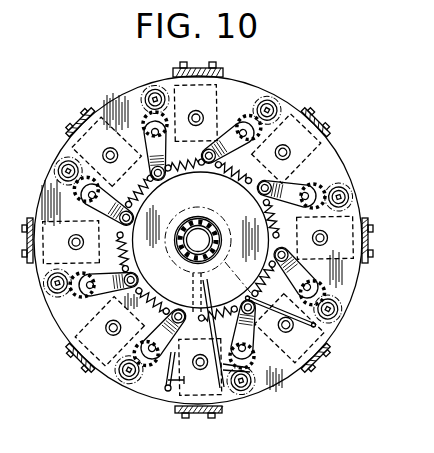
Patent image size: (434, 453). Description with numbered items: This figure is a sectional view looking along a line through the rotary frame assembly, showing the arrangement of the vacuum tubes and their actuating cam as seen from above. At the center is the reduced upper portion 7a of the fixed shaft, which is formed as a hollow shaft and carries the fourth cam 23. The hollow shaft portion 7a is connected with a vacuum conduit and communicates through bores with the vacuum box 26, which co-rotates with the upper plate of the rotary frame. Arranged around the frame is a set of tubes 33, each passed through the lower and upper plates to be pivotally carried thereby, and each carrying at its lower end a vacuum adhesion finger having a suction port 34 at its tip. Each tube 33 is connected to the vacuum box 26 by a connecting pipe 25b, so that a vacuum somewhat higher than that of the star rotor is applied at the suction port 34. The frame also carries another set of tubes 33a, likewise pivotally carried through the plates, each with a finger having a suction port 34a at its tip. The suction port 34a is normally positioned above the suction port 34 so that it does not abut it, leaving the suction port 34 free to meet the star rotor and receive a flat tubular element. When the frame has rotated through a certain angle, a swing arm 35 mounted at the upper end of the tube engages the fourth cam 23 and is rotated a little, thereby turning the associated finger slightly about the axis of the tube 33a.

The reduced upper portion of the fixed shaft 7a is at (180, 249).
The fourth cam 23 is at (138, 226).
The connecting pipe 25b is at (333, 332).
The vacuum box 26 is at (194, 207).
The tube 33 is at (310, 187).
The tube 33a is at (349, 196).
The suction port 34 is at (315, 252).
The suction port 34a is at (354, 240).
The swing arm 35 is at (300, 186).